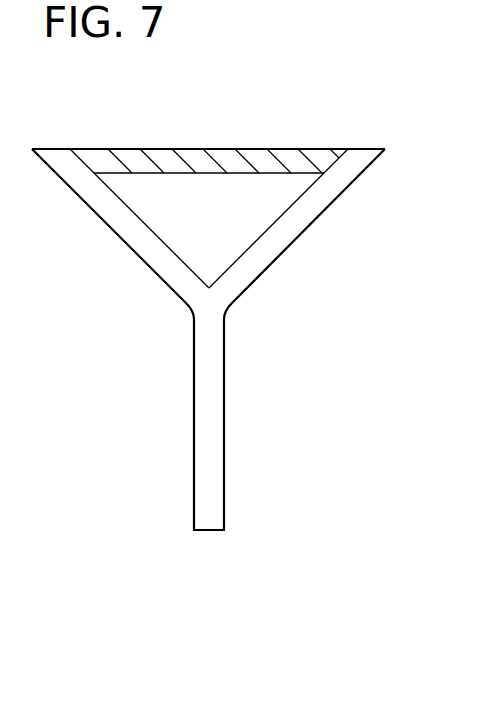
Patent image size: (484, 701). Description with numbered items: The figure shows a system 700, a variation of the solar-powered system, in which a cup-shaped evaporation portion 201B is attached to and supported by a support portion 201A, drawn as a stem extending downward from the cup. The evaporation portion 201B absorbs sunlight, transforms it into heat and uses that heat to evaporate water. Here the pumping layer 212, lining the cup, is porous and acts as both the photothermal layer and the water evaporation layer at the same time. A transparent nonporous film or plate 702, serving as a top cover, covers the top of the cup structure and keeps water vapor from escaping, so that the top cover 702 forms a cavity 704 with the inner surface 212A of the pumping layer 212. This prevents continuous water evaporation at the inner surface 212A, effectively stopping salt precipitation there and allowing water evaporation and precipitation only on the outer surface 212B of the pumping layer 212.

The system 700 is at (91, 96).
The transparent nonporous film or plate 702 is at (200, 148).
The cavity 704 is at (151, 191).
The pumping layer 212 is at (378, 148).
The inner surface 212A is at (238, 239).
The outer surface 212B is at (355, 205).
The support portion 201A is at (250, 445).
The evaporation portion 201B is at (116, 253).